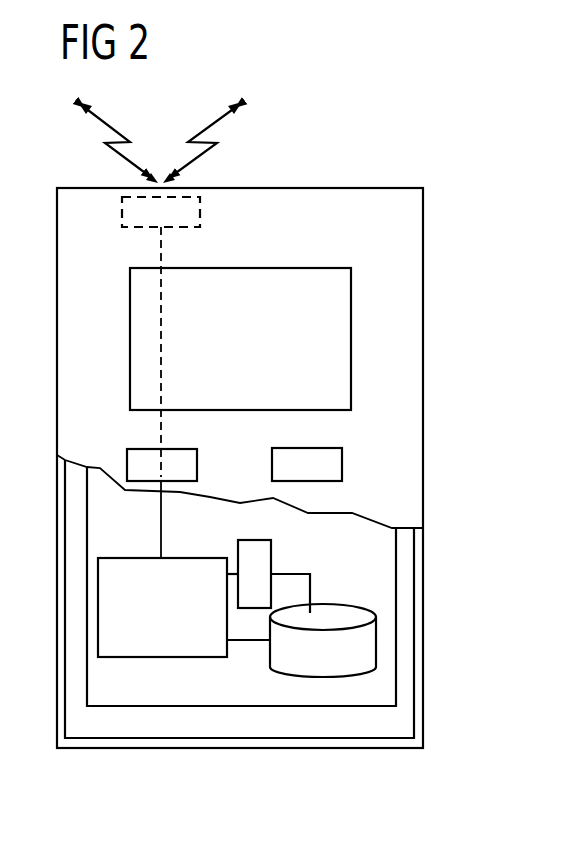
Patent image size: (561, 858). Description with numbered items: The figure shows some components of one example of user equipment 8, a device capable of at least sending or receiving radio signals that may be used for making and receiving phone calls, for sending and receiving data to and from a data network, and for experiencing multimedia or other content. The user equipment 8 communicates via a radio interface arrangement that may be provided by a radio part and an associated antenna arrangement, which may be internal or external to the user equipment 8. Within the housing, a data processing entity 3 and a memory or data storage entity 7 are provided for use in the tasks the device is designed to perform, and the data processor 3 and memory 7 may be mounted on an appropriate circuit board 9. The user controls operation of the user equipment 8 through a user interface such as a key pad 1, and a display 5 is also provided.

The key pad 1 is at (197, 463).
The data processing entity 3 is at (128, 558).
The display 5 is at (240, 268).
The memory 7 is at (350, 602).
The user equipment 8 is at (423, 340).
The circuit board 9 is at (383, 690).